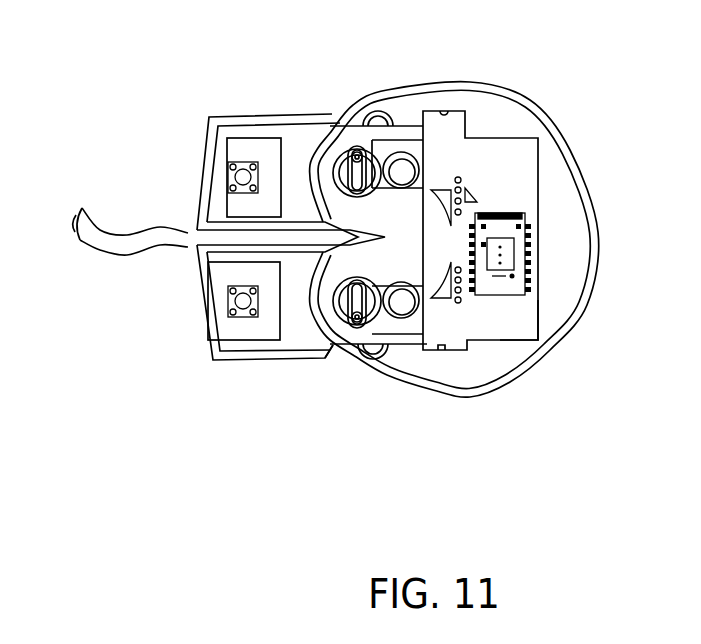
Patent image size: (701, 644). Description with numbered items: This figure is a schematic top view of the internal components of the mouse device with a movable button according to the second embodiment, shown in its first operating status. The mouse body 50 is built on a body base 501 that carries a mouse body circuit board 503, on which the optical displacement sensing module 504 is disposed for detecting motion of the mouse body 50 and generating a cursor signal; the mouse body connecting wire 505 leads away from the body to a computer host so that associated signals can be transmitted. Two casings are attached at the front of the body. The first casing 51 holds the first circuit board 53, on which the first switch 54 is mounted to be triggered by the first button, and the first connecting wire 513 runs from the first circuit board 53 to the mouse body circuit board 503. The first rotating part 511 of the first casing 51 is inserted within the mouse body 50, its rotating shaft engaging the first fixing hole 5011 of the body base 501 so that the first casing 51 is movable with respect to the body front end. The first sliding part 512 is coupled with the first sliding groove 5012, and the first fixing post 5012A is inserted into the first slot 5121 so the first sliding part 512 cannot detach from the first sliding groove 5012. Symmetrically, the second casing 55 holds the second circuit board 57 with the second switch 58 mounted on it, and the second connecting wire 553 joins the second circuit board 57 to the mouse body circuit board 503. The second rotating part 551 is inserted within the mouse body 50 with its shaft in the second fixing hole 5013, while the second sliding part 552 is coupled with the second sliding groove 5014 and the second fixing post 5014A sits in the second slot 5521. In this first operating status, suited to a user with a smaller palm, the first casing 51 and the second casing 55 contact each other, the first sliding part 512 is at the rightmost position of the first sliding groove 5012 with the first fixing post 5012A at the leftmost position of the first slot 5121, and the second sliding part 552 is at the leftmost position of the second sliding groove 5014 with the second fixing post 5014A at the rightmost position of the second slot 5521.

The mouse body 50 is at (548, 101).
The body base 501 is at (560, 260).
The first fixing hole 5011 is at (462, 322).
The first rotating part 511 is at (447, 340).
The mouse body circuit board 503 is at (527, 310).
The optical displacement sensing module 504 is at (518, 231).
The second fixing hole 5013 is at (403, 165).
The first connecting wire 513 is at (407, 307).
The second sliding groove 5014 is at (383, 120).
The second rotating part 551 is at (390, 132).
The second sliding part 552 is at (334, 172).
The second slot 5521 is at (345, 160).
The second fixing post 5014A is at (358, 152).
The first sliding groove 5012 is at (397, 330).
The first fixing post 5012A is at (359, 325).
The second casing 55 is at (204, 140).
The second connecting wire 553 is at (362, 105).
The second circuit board 57 is at (217, 207).
The second switch 58 is at (234, 174).
The first casing 51 is at (184, 274).
The first sliding part 512 is at (300, 315).
The first slot 5121 is at (333, 338).
The first circuit board 53 is at (237, 330).
The first switch 54 is at (232, 301).
The mouse body connecting wire 505 is at (103, 245).